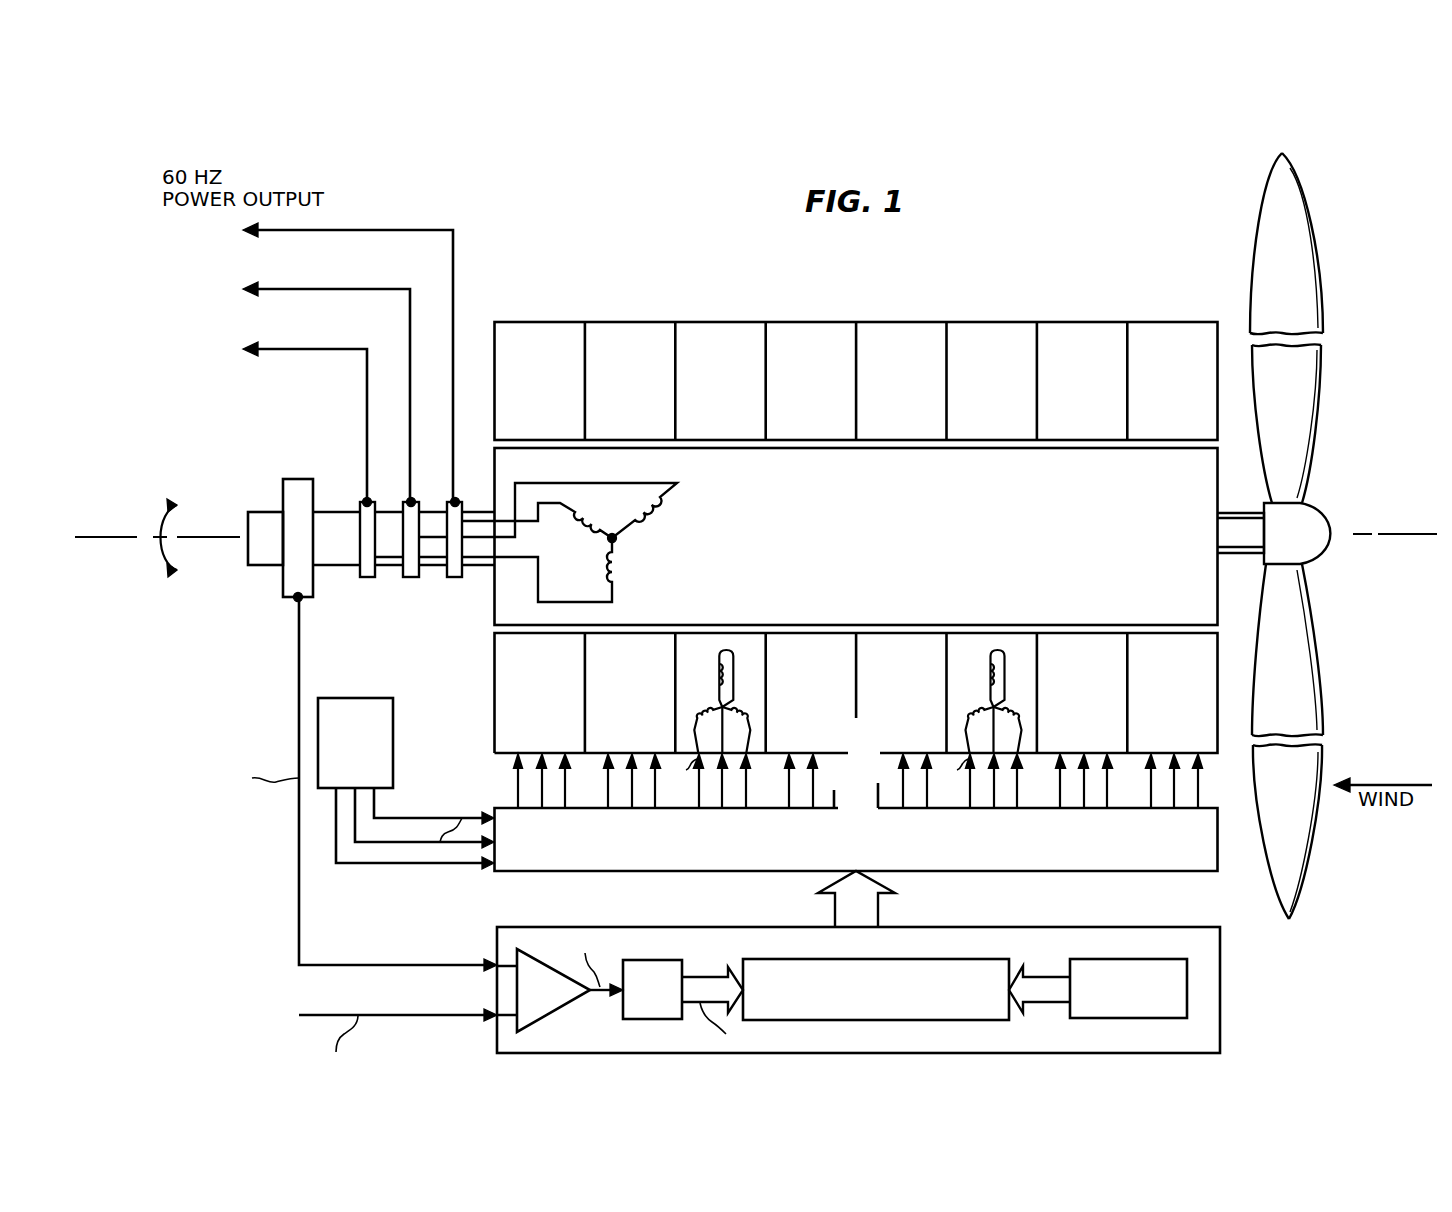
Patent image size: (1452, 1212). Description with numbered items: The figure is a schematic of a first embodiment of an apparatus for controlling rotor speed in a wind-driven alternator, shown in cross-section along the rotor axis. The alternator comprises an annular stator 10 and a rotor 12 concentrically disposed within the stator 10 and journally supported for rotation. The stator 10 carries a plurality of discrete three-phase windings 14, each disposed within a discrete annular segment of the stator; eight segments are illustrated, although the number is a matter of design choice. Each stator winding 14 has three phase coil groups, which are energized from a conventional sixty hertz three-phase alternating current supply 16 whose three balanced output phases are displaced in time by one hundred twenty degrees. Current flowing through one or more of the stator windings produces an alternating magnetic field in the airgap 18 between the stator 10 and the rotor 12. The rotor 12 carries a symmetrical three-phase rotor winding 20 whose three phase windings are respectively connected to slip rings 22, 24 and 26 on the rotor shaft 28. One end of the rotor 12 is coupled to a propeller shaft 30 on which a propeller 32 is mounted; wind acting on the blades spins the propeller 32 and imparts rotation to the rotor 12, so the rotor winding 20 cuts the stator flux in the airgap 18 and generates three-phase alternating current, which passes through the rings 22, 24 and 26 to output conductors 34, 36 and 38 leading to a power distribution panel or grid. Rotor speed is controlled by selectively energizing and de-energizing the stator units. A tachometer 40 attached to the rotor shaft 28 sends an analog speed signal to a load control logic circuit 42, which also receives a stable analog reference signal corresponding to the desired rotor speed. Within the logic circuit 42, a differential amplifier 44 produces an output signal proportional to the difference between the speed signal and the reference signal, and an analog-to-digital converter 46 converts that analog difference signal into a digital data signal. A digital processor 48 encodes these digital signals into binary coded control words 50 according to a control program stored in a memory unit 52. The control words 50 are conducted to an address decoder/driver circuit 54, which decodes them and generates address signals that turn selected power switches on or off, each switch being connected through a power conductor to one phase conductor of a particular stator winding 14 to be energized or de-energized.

The annular stator 10 is at (905, 292).
The rotor 12 is at (926, 600).
The three-phase stator winding 14 is at (745, 690).
The three-phase alternating current supply 16 is at (342, 753).
The airgap 18 is at (494, 631).
The rotor winding 20 is at (631, 540).
The slip ring 22 is at (457, 508).
The slip ring 24 is at (414, 508).
The slip ring 26 is at (370, 508).
The rotor shaft 28 is at (334, 580).
The propeller shaft 30 is at (268, 512).
The propeller 32 is at (1318, 698).
The output conductor 34 is at (417, 230).
The output conductor 36 is at (398, 289).
The output conductor 38 is at (338, 349).
The tachometer 40 is at (283, 580).
The load control logic circuit 42 is at (896, 990).
The differential amplifier 44 is at (555, 1011).
The analog-to-digital converter 46 is at (683, 963).
The digital processor 48 is at (975, 1020).
The binary coded digital data control words 50 is at (880, 900).
The memory unit 52 is at (1067, 963).
The address decoder/driver circuit 54 is at (568, 872).